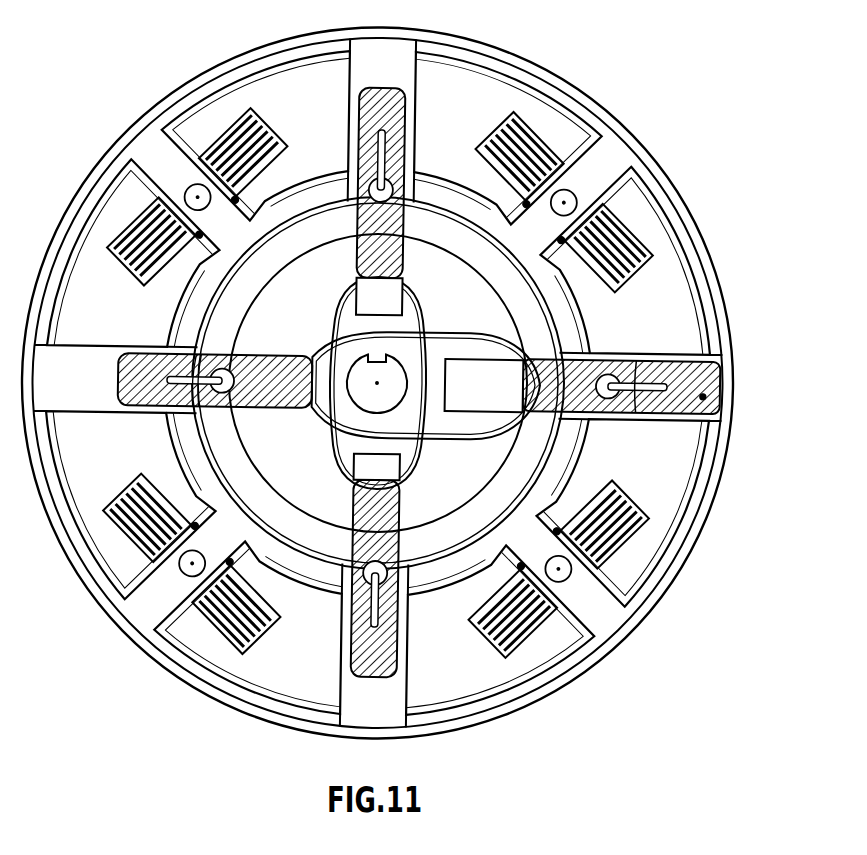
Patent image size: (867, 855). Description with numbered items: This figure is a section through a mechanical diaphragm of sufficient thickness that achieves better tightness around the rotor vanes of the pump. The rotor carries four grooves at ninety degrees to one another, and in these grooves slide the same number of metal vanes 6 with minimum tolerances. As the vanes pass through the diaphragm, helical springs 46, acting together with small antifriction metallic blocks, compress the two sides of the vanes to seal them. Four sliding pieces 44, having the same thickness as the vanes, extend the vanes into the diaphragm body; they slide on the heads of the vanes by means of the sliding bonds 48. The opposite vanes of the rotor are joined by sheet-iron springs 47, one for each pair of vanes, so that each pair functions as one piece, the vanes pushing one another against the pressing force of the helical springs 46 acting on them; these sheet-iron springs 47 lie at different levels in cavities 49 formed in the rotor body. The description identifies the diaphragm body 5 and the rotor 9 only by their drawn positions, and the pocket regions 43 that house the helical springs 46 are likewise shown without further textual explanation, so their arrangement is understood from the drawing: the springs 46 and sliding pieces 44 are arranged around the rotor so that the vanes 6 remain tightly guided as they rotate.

The housing rim 5 is at (686, 548).
The metal vanes 6 is at (357, 508).
The rotor ring 9 is at (325, 540).
The spring pocket 43 is at (468, 92).
The sliding pieces 44 is at (722, 390).
The springs 46 is at (125, 230).
The sheet-iron springs 47 is at (468, 332).
The sliding bonds 48 is at (245, 393).
The cavities 49 is at (312, 318).